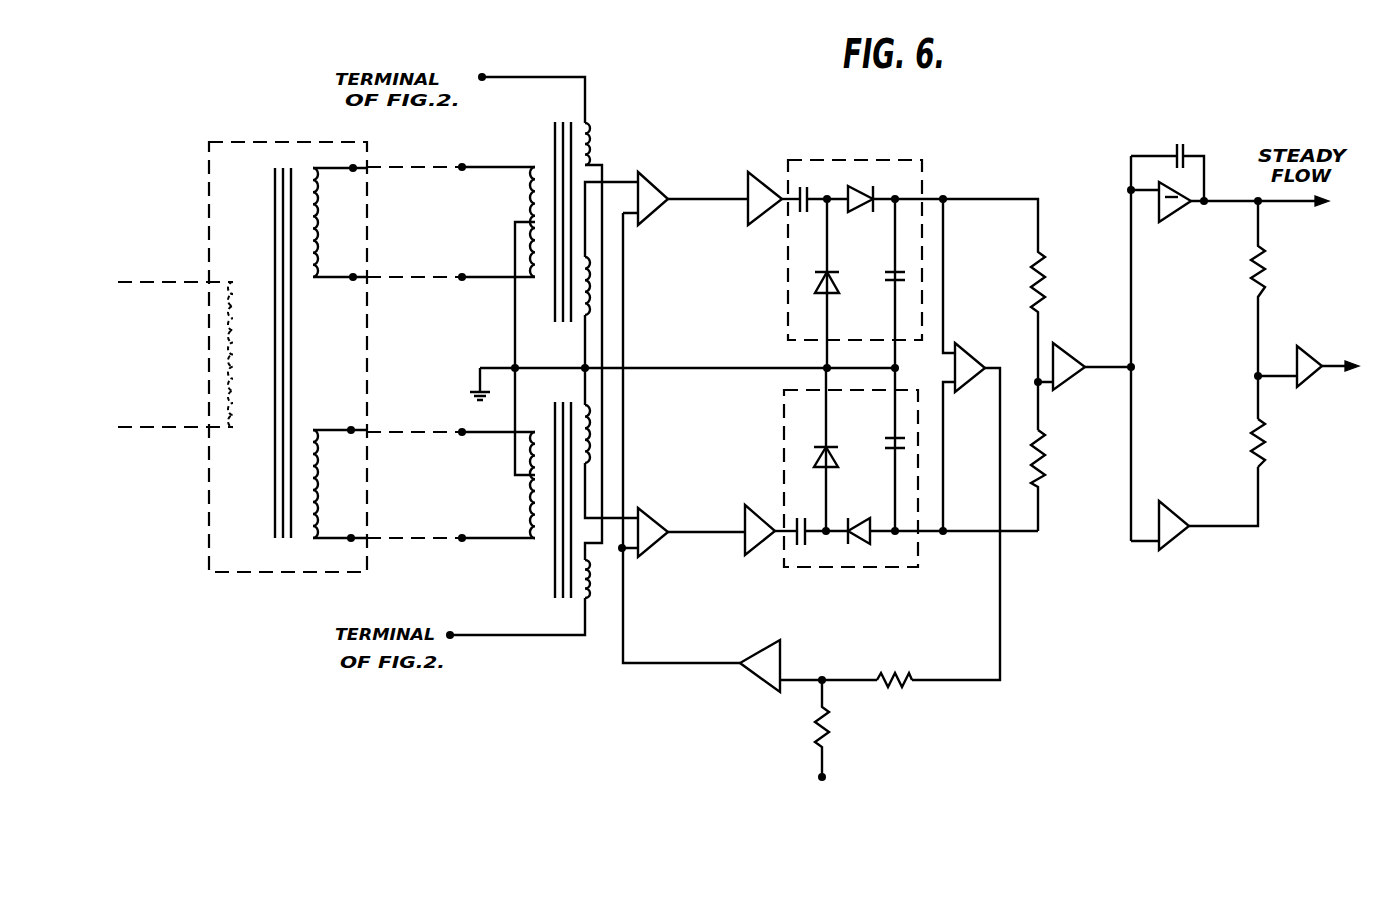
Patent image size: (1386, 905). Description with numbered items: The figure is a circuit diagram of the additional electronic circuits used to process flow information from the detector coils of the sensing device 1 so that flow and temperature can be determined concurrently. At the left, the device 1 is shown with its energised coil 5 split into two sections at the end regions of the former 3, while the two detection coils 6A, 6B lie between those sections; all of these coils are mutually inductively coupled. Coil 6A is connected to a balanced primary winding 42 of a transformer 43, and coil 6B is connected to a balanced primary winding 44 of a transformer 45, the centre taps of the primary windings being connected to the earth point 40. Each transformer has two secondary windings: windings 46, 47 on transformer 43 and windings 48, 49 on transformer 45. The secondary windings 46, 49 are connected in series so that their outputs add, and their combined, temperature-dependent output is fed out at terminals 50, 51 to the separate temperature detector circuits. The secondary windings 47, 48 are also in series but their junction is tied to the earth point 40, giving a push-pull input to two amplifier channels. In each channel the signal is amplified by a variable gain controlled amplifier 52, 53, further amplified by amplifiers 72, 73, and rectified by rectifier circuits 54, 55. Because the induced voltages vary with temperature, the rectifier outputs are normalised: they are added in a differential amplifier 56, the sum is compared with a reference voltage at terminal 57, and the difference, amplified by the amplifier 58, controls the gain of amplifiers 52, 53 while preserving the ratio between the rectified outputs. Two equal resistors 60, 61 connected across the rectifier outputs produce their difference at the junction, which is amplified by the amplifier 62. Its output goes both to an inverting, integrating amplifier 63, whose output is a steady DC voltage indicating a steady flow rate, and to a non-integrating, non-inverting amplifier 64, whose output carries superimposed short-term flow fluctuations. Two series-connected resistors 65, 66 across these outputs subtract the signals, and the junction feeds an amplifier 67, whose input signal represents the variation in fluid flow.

The device 1 is at (271, 380).
The former 3 is at (300, 353).
The coil 5 is at (175, 354).
The detection coil 6A is at (312, 196).
The detection coil 6B is at (321, 515).
The earth point 40 is at (678, 364).
The primary winding 42 is at (496, 265).
The transformer 43 is at (528, 215).
The primary winding 44 is at (496, 455).
The transformer 45 is at (513, 500).
The secondary winding 46 is at (610, 338).
The secondary winding 47 is at (629, 275).
The secondary winding 48 is at (628, 443).
The secondary winding 49 is at (561, 597).
The terminal 50 is at (459, 622).
The terminal 51 is at (520, 80).
The variable gain controlled amplifier 52 is at (685, 404).
The variable gain controlled amplifier 53 is at (681, 516).
The rectifier circuit 54 is at (865, 247).
The rectifier circuit 55 is at (911, 485).
The differential amplifier 56 is at (956, 437).
The terminal 57 is at (831, 733).
The amplifier 58 is at (804, 671).
The resistor 60 is at (1014, 314).
The resistor 61 is at (1057, 480).
The amplifier 62 is at (1086, 378).
The inverting, integrating amplifier 63 is at (1228, 342).
The non-integrating, non-inverting amplifier 64 is at (1194, 531).
The resistor 65 is at (1284, 308).
The resistor 66 is at (1283, 448).
The amplifier 67 is at (1308, 384).
The amplifier 72 is at (759, 179).
The amplifier 73 is at (751, 548).